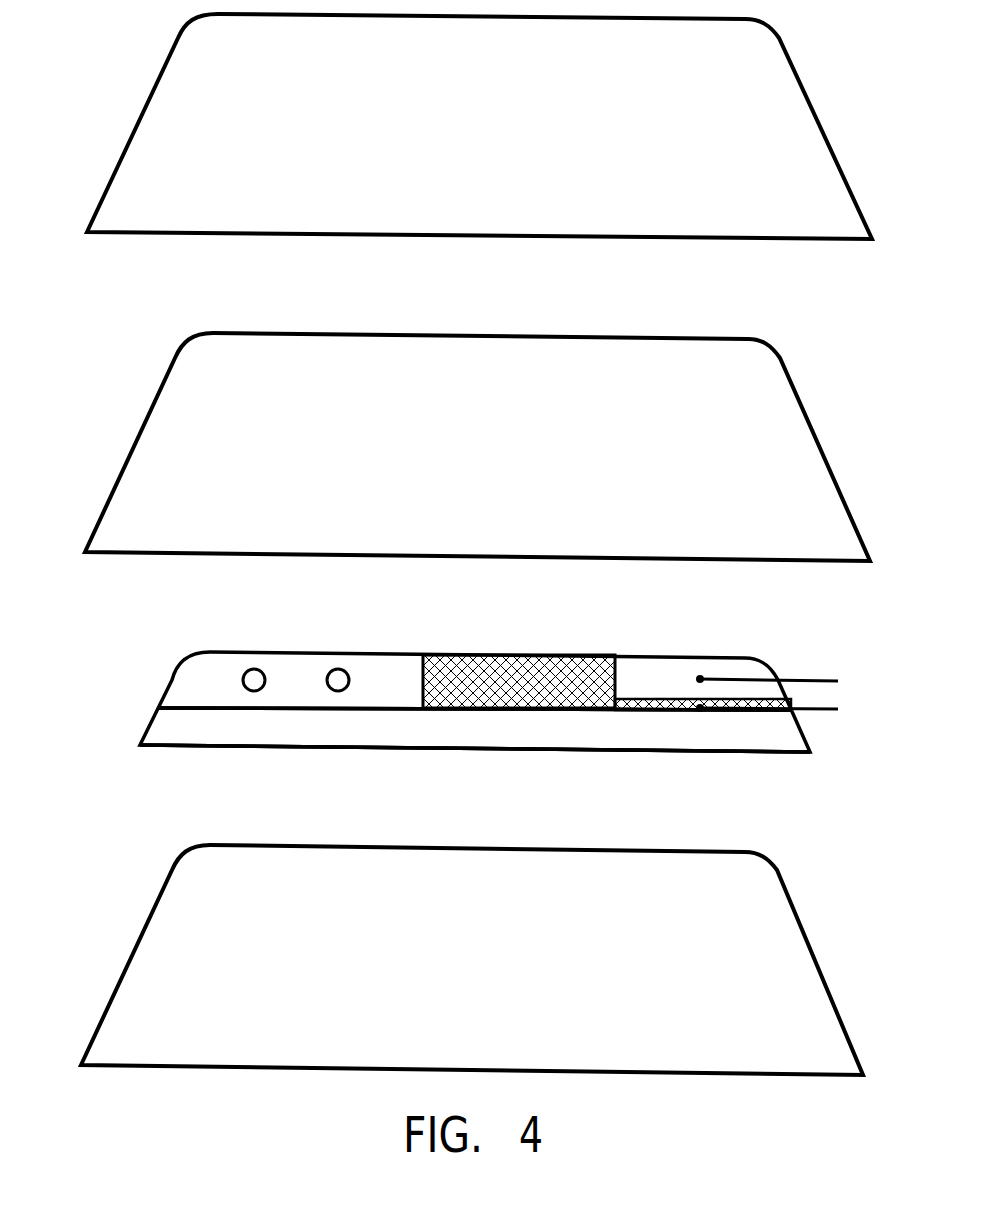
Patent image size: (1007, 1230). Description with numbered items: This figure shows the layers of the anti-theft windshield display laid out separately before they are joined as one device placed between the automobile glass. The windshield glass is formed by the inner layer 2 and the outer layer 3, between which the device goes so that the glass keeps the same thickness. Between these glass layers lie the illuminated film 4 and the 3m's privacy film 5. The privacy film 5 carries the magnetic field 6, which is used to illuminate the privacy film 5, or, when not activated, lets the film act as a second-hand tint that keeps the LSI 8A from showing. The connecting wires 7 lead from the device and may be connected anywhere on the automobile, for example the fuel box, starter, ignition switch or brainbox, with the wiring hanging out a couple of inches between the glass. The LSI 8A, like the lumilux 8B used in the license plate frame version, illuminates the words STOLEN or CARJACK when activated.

The inner layer 2 is at (203, 118).
The illuminated film 4 is at (203, 438).
The outer layer 3 is at (198, 950).
The 3m's privacy film 5 is at (222, 692).
The magnetic field 6 is at (538, 682).
The connecting wires 7 is at (843, 706).
The LSI 8A is at (535, 730).
The lumilux 8B is at (475, 730).